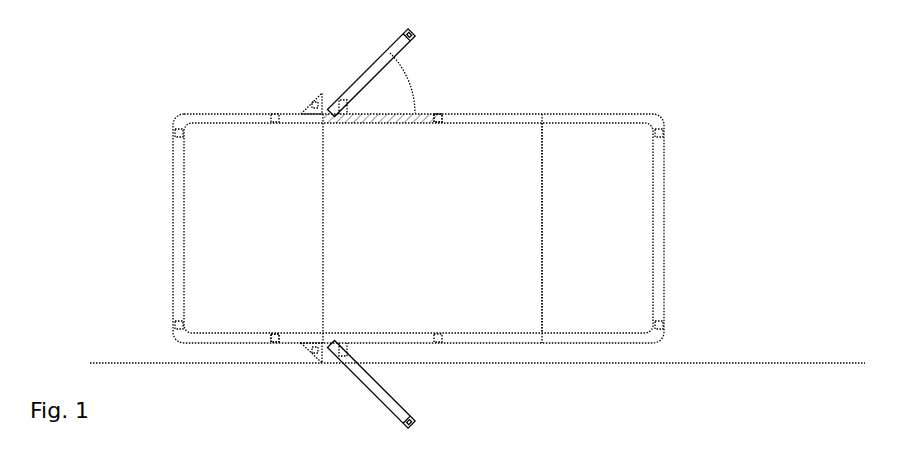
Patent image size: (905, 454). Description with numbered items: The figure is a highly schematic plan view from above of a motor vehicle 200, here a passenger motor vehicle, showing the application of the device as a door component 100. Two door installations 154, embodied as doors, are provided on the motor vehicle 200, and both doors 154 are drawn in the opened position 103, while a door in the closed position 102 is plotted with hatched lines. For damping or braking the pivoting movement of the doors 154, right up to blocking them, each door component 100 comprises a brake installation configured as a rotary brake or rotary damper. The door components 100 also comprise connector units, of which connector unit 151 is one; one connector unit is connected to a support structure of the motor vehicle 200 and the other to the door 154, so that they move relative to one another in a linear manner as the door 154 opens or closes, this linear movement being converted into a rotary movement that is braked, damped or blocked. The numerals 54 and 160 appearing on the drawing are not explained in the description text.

The motor vehicle 200 is at (147, 96).
The door component 100 is at (355, 139).
The closed position 102 is at (424, 122).
The opened position 103 is at (507, 59).
The fastener 54 is at (440, 130).
The connector unit 151 is at (334, 341).
The door installation 154 is at (362, 70).
The clamp 160 is at (275, 344).